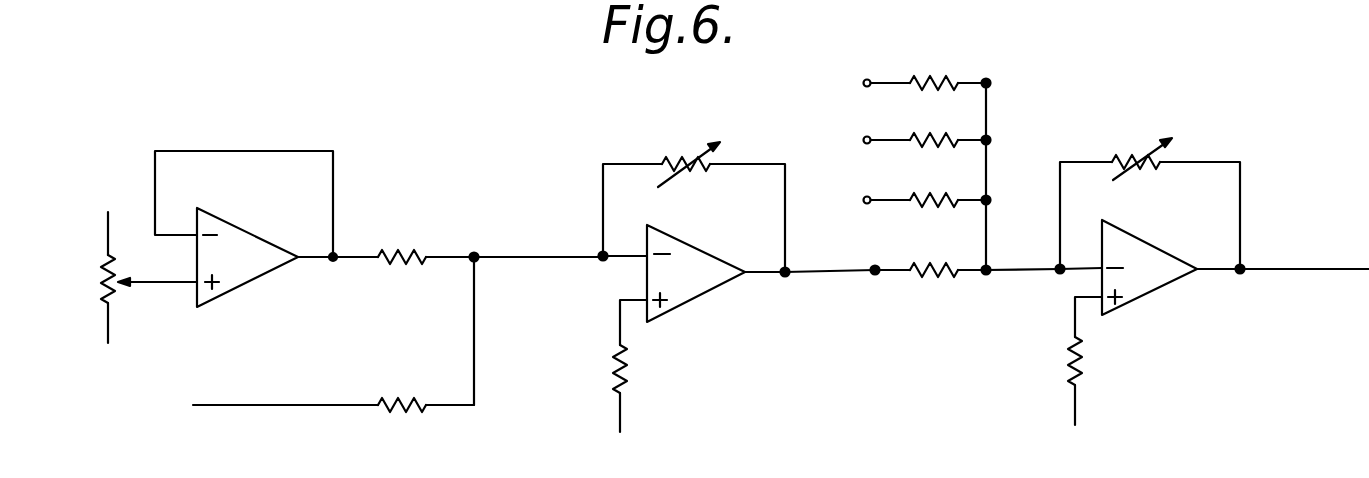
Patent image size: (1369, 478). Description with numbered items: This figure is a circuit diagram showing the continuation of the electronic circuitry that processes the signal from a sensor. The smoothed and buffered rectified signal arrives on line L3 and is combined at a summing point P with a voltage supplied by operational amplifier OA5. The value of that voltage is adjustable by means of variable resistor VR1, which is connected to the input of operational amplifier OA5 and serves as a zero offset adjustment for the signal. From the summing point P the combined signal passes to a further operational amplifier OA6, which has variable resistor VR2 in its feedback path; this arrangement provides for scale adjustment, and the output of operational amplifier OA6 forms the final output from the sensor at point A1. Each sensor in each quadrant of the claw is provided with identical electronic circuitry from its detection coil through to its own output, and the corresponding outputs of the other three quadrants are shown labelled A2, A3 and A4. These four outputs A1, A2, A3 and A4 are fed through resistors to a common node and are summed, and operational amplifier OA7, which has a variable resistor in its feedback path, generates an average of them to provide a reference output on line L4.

The variable resistor VR1 is at (123, 277).
The operational amplifier OA5 is at (379, 232).
The summing point P is at (481, 259).
The line L3 is at (333, 418).
The variable resistor VR2 is at (689, 176).
The further operational amplifier OA6 is at (694, 298).
The output point A1 is at (868, 256).
The corresponding output A2 is at (922, 188).
The corresponding output A3 is at (923, 127).
The corresponding output A4 is at (923, 70).
The operational amplifier OA7 is at (1150, 281).
The line L4 is at (1283, 284).